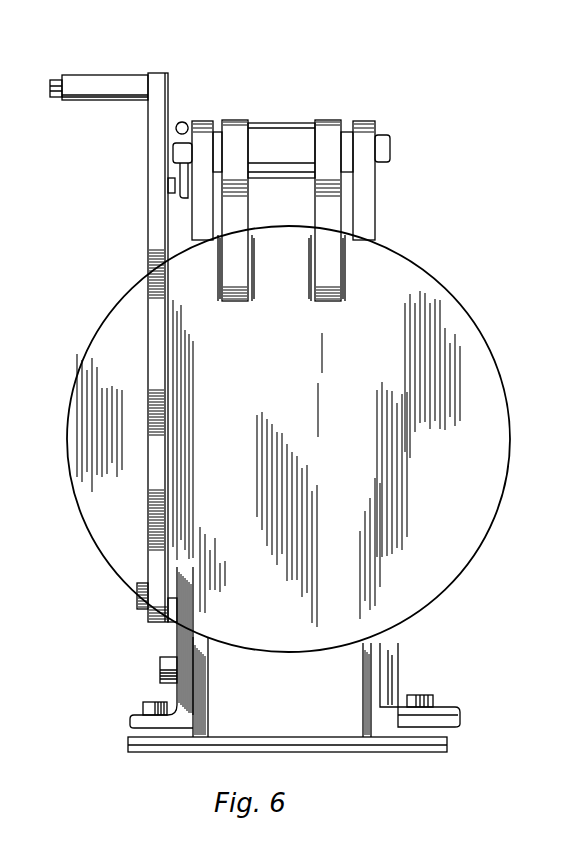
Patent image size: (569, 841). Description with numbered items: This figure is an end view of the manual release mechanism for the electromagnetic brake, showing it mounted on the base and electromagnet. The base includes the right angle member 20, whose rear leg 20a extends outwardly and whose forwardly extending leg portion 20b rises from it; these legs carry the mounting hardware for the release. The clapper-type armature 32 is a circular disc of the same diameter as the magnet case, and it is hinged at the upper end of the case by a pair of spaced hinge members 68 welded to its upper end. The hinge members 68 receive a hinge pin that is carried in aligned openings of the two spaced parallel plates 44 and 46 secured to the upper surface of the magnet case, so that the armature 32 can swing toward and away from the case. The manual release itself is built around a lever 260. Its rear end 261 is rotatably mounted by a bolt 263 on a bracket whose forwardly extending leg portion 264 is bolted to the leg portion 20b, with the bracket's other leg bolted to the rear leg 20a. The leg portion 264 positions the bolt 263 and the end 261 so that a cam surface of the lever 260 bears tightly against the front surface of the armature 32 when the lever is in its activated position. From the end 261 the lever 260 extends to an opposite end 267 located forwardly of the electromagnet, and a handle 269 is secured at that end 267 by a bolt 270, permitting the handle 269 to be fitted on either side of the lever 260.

The right angle member 20 is at (198, 734).
The rear leg 20a is at (140, 730).
The forwardly extending leg portion 20b is at (200, 663).
The armature 32 is at (475, 324).
The plate 44 is at (200, 121).
The plate 46 is at (363, 121).
The hinge member 68 is at (235, 291).
The lever 260 is at (148, 327).
The end 261 is at (163, 602).
The bolt 263 is at (137, 590).
The leg portion 264 is at (183, 688).
The end 267 is at (200, 44).
The handle 269 is at (128, 66).
The bolt 270 is at (54, 98).